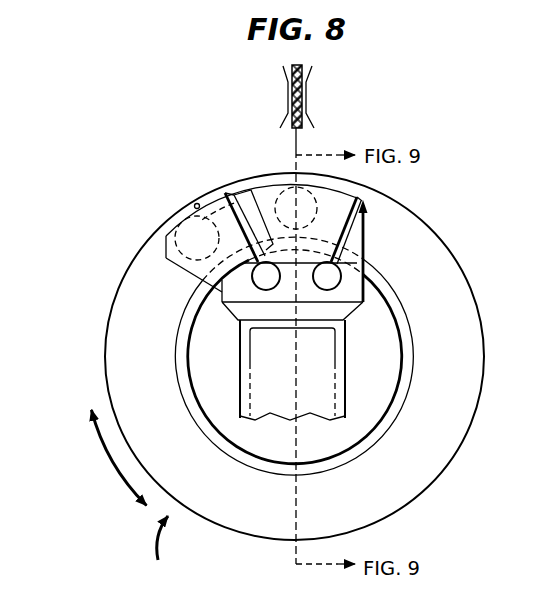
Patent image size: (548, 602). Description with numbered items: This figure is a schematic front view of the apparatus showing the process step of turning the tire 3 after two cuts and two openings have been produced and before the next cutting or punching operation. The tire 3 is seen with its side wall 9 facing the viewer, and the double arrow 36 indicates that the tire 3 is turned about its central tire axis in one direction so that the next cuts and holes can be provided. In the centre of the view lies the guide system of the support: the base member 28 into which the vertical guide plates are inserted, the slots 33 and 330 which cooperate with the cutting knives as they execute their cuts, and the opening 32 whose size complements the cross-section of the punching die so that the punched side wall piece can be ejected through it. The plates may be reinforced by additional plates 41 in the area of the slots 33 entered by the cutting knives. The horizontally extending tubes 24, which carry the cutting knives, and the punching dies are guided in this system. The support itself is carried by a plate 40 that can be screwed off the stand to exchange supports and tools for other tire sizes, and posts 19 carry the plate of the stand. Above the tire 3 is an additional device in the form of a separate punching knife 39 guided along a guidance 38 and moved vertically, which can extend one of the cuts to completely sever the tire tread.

The tire 3 is at (164, 553).
The side wall 9 is at (448, 270).
The post 19 is at (345, 393).
The tube 24 is at (272, 282).
The base member 28 is at (338, 296).
The opening 32 is at (195, 204).
The slot 33 is at (366, 212).
The double arrow 36 is at (110, 463).
The guidance 38 is at (309, 95).
The punching knife 39 is at (292, 68).
The plate 40 is at (343, 310).
The additional plate 41 is at (247, 198).
The slot 330 is at (236, 197).